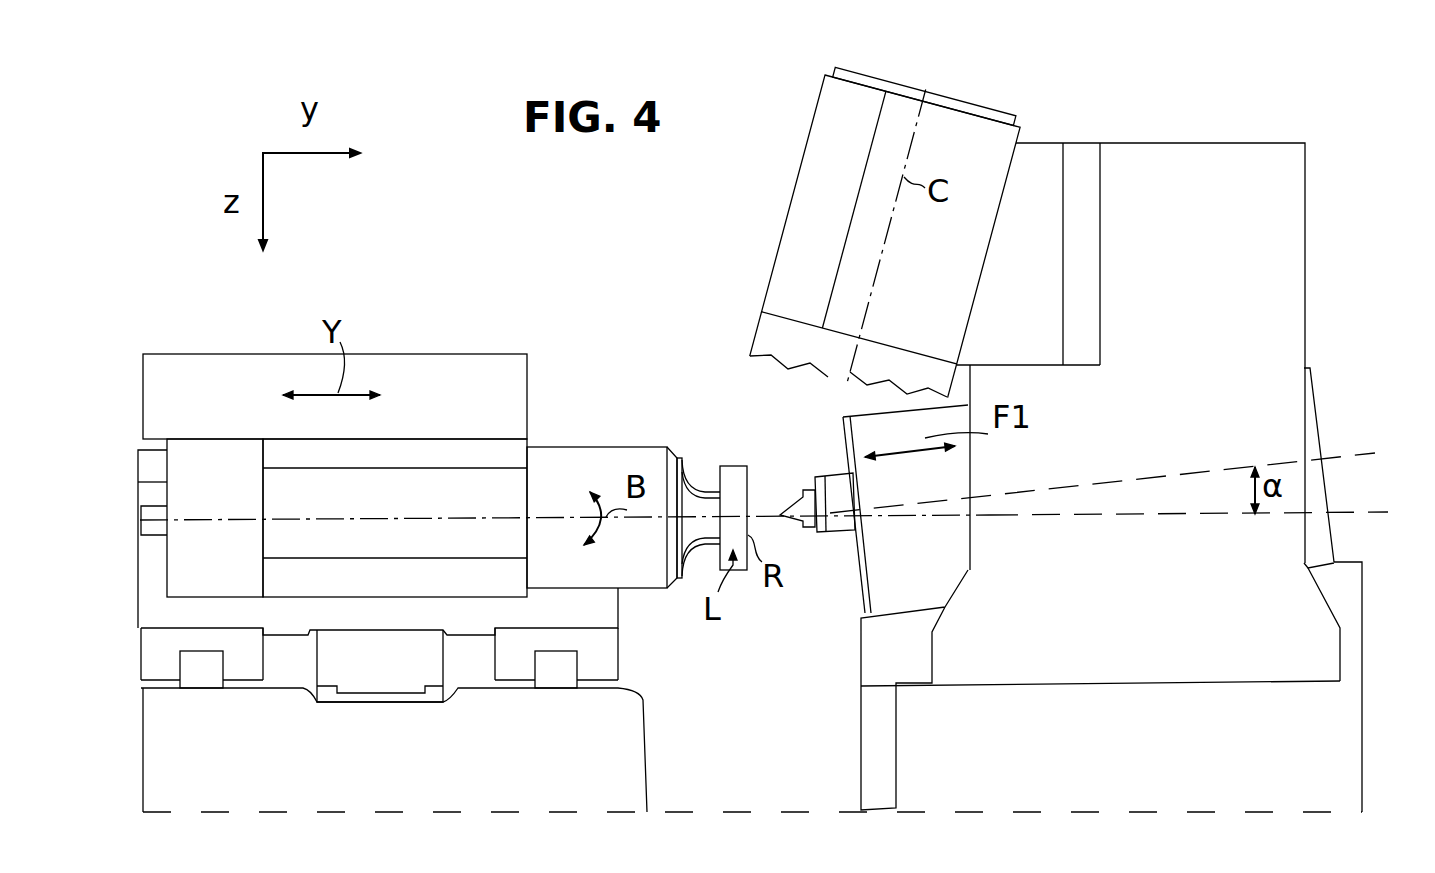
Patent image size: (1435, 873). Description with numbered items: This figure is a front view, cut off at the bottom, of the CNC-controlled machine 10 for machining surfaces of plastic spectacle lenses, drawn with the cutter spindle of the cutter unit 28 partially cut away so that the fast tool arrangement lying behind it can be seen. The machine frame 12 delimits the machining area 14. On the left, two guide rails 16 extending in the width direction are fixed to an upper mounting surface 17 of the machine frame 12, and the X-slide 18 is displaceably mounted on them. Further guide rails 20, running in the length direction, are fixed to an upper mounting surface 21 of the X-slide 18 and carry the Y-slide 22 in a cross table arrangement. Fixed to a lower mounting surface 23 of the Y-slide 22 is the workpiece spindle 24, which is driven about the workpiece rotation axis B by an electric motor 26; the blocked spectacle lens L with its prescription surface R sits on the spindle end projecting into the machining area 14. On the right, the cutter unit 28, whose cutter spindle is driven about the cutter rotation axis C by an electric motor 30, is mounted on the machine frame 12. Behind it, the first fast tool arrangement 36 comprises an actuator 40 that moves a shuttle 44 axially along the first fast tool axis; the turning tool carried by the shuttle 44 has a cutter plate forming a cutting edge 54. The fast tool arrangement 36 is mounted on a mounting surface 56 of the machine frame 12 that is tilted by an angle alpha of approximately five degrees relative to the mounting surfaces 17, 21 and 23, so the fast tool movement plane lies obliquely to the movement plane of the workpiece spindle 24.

The CNC-controlled machine 10 is at (1098, 115).
The machine frame 12 is at (1078, 765).
The machining area 14 is at (723, 440).
The guide rails 16 is at (205, 675).
The upper mounting surface 17 is at (272, 693).
The X-slide 18 is at (165, 614).
The further guide rails 20 is at (156, 468).
The upper mounting surface of X-slide 21 is at (135, 473).
The Y-slide 22 is at (483, 413).
The lower mounting surface 23 is at (240, 447).
The workpiece spindle 24 is at (580, 501).
The electric motor 26 is at (235, 498).
The cutter unit 28 is at (950, 135).
The electric motor 30 is at (903, 88).
The first fast tool arrangement 36 is at (1322, 420).
The actuator 40 is at (1312, 493).
The shuttle 44 is at (848, 494).
The cutting edge 54 is at (785, 510).
The mounting surface 56 is at (1348, 556).